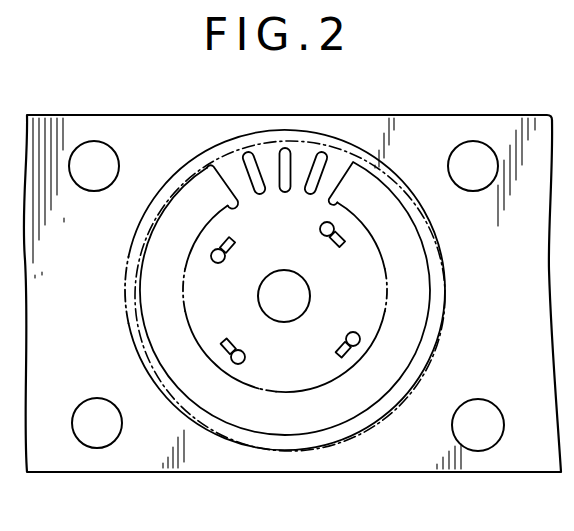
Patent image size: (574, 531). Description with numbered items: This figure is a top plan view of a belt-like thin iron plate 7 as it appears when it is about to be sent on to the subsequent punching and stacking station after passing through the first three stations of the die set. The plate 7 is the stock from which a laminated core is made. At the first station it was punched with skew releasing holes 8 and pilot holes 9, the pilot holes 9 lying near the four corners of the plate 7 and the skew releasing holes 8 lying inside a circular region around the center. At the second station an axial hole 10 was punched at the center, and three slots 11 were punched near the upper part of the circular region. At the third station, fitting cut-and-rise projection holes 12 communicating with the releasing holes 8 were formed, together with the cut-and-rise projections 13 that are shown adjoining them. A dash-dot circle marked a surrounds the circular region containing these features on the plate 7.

The belt-like thin iron plate 7 is at (531, 116).
The skew releasing holes 8 is at (281, 276).
The pilot holes 9 is at (95, 143).
The axial hole 10 is at (310, 287).
The slots 11 is at (256, 163).
The fitting cut-and-rise projection holes 12 is at (233, 248).
The cut-and-rise projections 13 is at (228, 238).
The pitch circle a is at (383, 168).